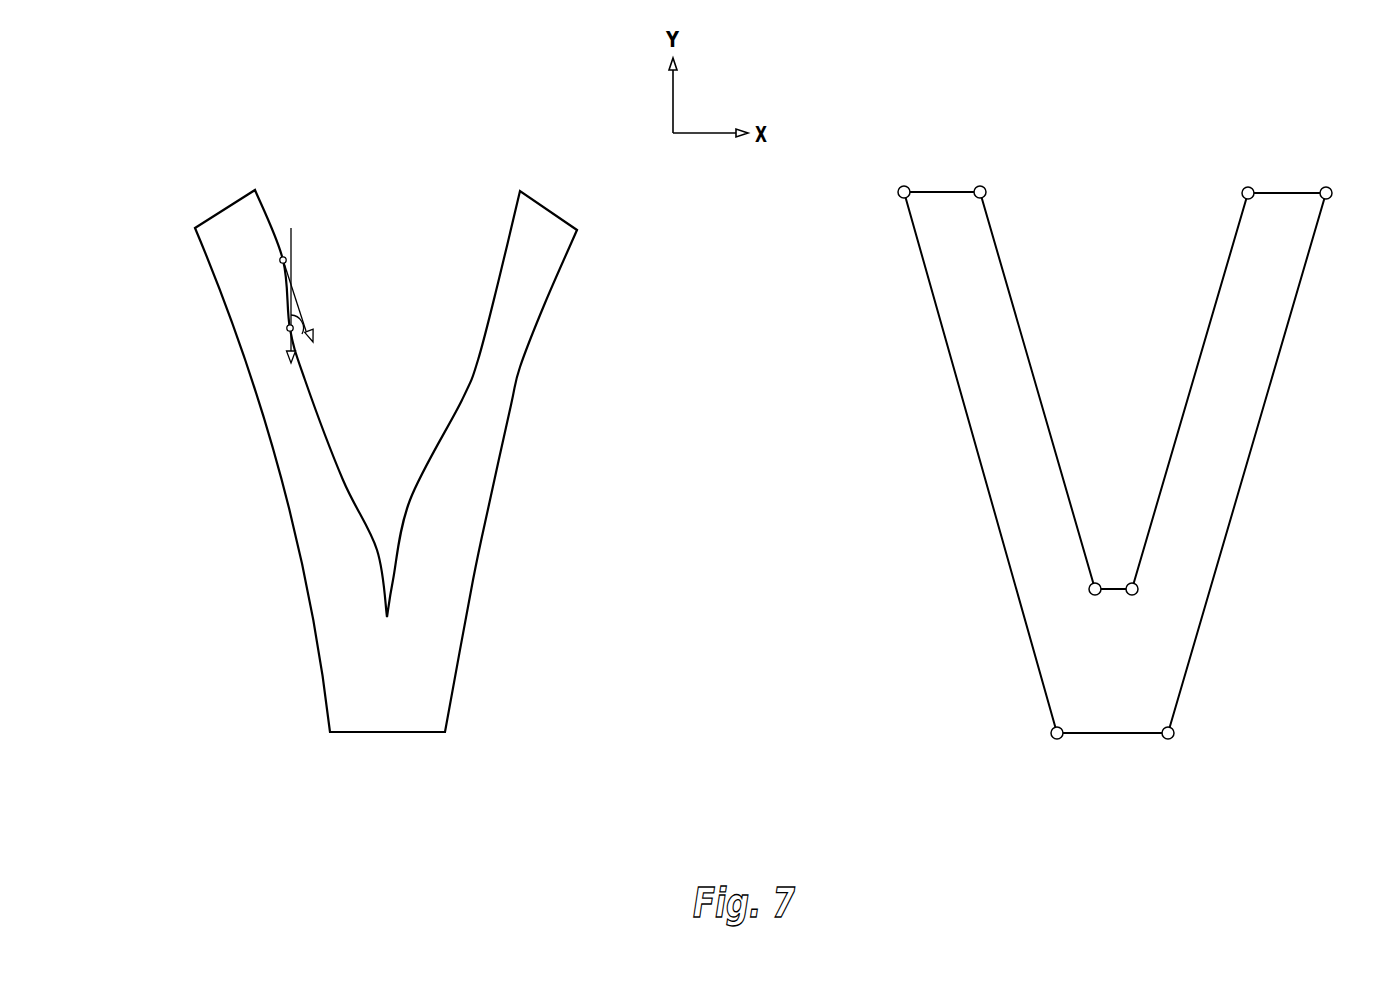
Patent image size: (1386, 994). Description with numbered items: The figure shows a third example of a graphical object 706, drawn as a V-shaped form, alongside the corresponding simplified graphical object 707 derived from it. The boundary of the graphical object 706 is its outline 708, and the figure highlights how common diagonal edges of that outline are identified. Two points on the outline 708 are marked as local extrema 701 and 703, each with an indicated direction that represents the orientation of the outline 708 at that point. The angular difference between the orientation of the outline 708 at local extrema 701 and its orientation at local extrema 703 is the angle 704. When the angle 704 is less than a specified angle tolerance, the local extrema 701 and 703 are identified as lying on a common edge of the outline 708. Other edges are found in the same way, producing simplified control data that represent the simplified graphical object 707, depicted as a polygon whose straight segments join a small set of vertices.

The local extrema 701 is at (286, 257).
The local extrema 703 is at (287, 327).
The angle 704 is at (302, 334).
The graphical object 706 is at (389, 522).
The simplified graphical object 707 is at (1132, 798).
The outline 708 is at (475, 565).